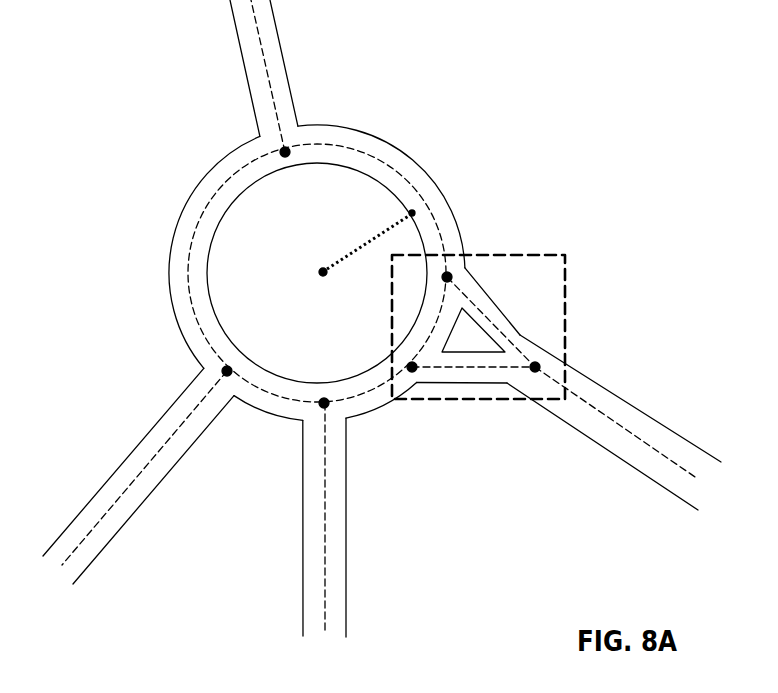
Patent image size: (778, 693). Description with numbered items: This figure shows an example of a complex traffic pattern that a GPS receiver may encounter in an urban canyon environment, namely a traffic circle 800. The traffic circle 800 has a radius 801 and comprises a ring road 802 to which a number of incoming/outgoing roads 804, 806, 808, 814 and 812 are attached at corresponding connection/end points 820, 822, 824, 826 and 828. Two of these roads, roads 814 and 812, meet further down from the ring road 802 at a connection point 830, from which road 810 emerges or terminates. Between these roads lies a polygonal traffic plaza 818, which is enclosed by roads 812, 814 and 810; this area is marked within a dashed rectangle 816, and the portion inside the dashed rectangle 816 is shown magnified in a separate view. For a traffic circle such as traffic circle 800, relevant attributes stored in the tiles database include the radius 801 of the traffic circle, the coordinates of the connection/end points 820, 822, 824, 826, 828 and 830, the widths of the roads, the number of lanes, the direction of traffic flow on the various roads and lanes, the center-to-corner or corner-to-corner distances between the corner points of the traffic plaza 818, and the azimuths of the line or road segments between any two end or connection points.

The traffic circle 800 is at (257, 258).
The radius 801 is at (331, 264).
The ring road 802 is at (408, 161).
The incoming/outgoing road 804 is at (288, 77).
The incoming/outgoing road 806 is at (153, 490).
The incoming/outgoing road 808 is at (346, 601).
The road 810 is at (625, 400).
The incoming/outgoing road 812 is at (483, 293).
The incoming/outgoing road 814 is at (467, 332).
The dashed rectangle 816 is at (566, 289).
The polygonal traffic plaza 818 is at (416, 384).
The connection/end point 820 is at (285, 153).
The connection/end point 822 is at (227, 371).
The connection/end point 824 is at (324, 400).
The connection/end point 826 is at (412, 367).
The connection/end point 828 is at (447, 277).
The connection point 830 is at (537, 372).